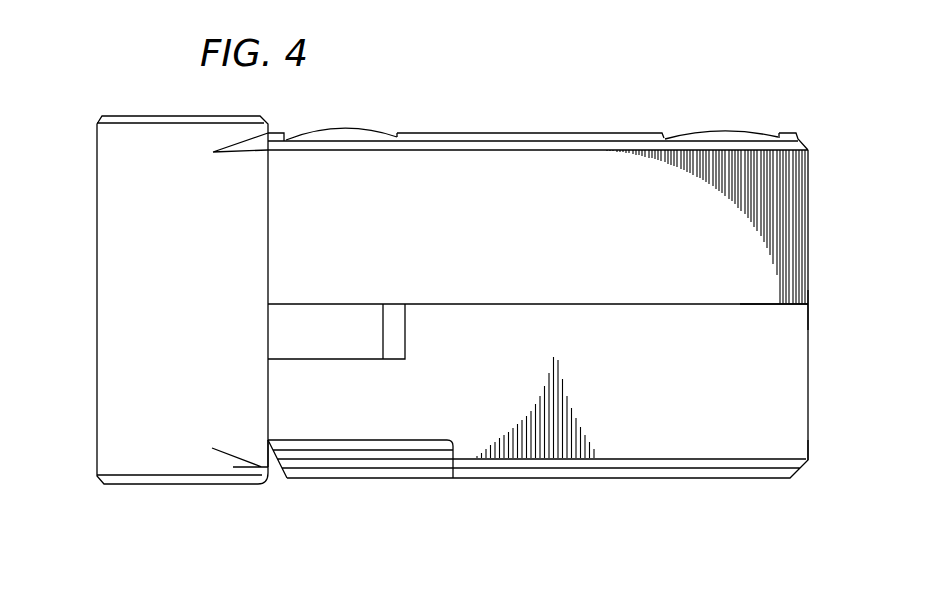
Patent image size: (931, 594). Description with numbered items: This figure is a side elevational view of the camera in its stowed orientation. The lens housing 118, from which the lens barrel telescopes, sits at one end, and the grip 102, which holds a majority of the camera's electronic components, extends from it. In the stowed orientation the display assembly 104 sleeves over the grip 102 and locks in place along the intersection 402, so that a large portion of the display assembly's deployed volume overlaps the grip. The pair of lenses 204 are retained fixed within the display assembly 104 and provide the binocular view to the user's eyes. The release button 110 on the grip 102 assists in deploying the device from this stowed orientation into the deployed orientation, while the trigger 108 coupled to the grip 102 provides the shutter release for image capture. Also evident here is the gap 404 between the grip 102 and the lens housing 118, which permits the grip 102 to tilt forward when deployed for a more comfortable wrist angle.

The lens housing 118 is at (97, 208).
The display assembly 104 is at (546, 165).
The lenses 204 is at (372, 128).
The release button 110 is at (395, 318).
The intersection 402 is at (762, 306).
The gap 404 is at (274, 472).
The trigger 108 is at (383, 478).
The grip 102 is at (696, 448).